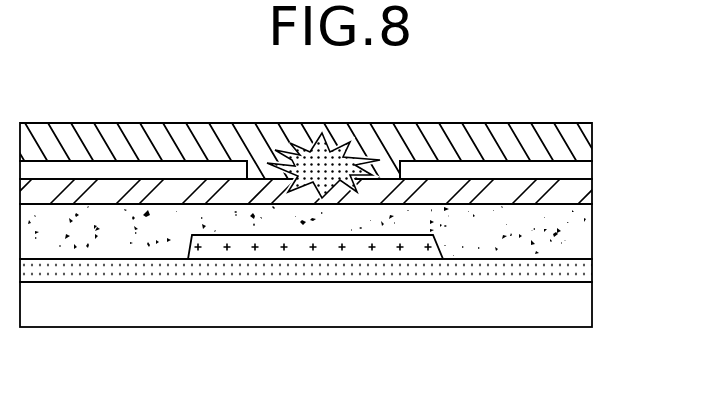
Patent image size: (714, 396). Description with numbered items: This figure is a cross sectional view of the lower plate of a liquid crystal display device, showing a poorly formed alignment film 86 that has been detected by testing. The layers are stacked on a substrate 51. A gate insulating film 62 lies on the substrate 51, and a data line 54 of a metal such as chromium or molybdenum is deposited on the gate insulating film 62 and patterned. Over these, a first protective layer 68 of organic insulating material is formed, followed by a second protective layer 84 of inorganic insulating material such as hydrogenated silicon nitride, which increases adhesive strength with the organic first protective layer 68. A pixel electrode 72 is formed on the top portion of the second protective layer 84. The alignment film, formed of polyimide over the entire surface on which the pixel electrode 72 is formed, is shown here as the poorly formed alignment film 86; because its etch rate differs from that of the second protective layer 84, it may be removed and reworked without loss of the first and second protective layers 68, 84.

The substrate 51 is at (577, 303).
The data line 54 is at (372, 243).
The gate insulating film 62 is at (577, 268).
The first protective layer 68 is at (577, 230).
The pixel electrode 72 is at (577, 165).
The second protective layer 84 is at (577, 189).
The poorly formed alignment film 86 is at (577, 137).